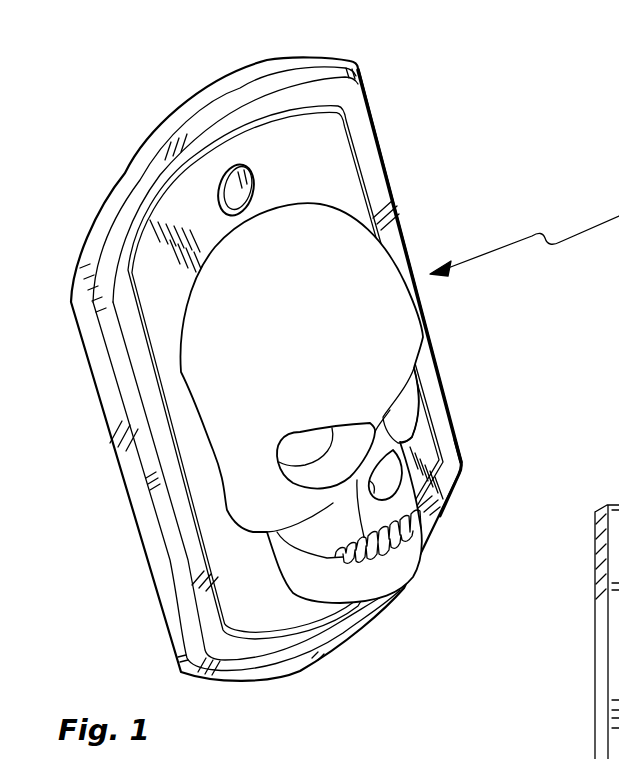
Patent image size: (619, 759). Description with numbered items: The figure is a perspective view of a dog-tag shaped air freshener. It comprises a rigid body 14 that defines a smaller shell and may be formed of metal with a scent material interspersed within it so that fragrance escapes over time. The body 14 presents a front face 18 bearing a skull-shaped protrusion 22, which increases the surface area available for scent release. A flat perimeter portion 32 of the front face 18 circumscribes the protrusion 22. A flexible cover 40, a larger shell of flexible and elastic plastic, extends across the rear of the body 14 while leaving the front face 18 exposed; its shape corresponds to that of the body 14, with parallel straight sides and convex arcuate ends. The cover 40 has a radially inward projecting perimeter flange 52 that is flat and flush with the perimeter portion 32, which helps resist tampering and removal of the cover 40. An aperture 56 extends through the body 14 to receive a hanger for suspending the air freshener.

The rigid body 14 is at (335, 155).
The front face 18 is at (335, 281).
The protrusion 22 is at (400, 335).
The perimeter portion 32 is at (225, 565).
The flexible cover 40 is at (447, 413).
The perimeter flange 52 is at (453, 457).
The aperture 56 is at (240, 163).